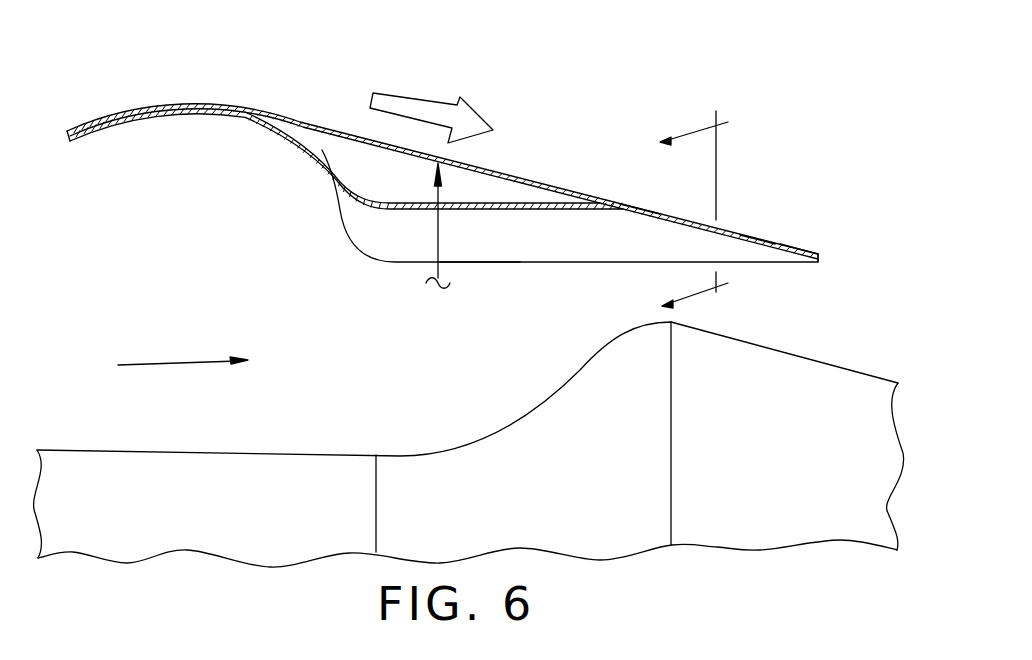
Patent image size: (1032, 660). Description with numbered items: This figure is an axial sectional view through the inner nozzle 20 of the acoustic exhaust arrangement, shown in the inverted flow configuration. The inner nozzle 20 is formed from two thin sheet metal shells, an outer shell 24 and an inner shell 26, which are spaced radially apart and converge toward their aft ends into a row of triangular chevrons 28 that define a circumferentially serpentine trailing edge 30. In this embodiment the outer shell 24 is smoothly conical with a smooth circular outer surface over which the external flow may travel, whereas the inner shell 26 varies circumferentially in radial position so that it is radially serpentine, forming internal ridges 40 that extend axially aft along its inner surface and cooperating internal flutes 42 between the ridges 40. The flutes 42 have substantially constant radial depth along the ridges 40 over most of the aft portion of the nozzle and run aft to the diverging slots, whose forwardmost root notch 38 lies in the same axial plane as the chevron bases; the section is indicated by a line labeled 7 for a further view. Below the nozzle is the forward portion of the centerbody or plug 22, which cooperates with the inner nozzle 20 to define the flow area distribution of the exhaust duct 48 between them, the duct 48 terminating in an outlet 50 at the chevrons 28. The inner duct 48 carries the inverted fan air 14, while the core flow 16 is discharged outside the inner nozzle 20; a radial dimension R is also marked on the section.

The inner nozzle 20 is at (468, 152).
The outer shell 24 is at (228, 105).
The flutes 42 is at (543, 212).
The root notch 38 is at (640, 208).
The trailing edge 30 is at (757, 240).
The chevrons 28 is at (790, 242).
The ridges 40 is at (587, 263).
The inner shell 26 is at (482, 263).
The radius R is at (435, 235).
The core combustion gases 16 is at (477, 112).
The fan air 14 is at (165, 363).
The section line 7- 7 is at (708, 202).
The plug 22 is at (469, 431).
The exhaust duct 48 is at (383, 375).
The outlet 50 is at (790, 321).